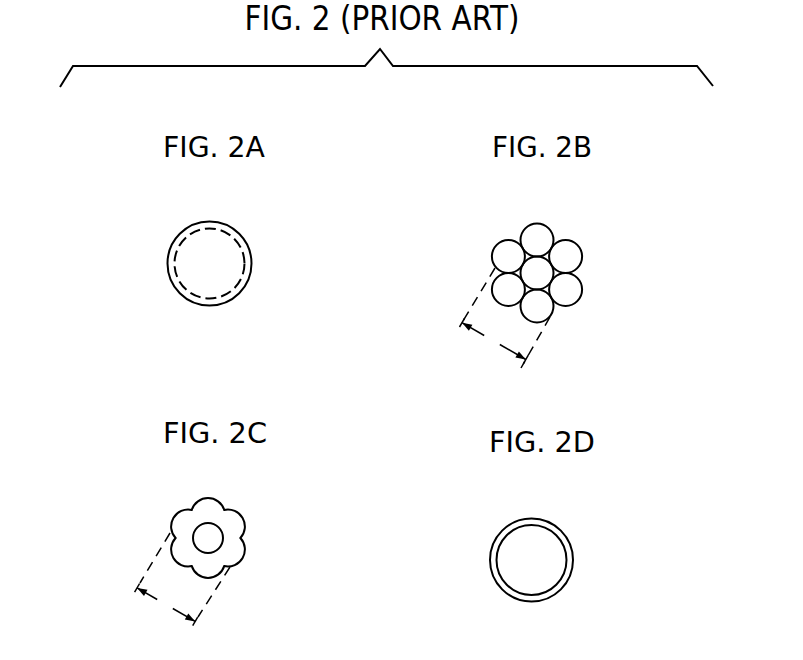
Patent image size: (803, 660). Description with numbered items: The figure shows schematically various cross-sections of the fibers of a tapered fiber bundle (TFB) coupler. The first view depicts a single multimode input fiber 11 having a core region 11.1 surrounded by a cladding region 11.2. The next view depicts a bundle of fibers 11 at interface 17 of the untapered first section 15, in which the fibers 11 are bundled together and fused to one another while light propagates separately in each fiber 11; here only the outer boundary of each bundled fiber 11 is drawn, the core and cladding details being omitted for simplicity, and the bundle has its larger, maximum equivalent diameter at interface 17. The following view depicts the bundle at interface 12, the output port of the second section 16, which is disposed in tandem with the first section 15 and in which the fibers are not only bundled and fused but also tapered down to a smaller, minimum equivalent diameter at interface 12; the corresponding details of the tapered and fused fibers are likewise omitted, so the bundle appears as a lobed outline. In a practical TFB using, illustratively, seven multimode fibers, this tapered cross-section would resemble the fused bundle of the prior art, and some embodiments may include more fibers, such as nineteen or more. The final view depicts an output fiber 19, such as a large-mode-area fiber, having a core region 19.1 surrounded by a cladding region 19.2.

In FIG. 2A, the multimode input fiber 11 is at (247, 256).
In FIG. 2B, the multimode input fiber 11 is at (568, 260).
In FIG. 2A, the core region 11.1 is at (223, 287).
In FIG. 2A, the cladding region 11.2 is at (252, 260).
In FIG. 2B, the first section 15 is at (577, 261).
In FIG. 2B, the interface 17 is at (505, 323).
In FIG. 2C, the second section 16 is at (238, 503).
In FIG. 2C, the interface (output port) 12 is at (182, 588).
In FIG. 2D, the output fiber 19 is at (569, 555).
In FIG. 2D, the core region 19.1 is at (548, 552).
In FIG. 2D, the cladding region 19.2 is at (558, 595).